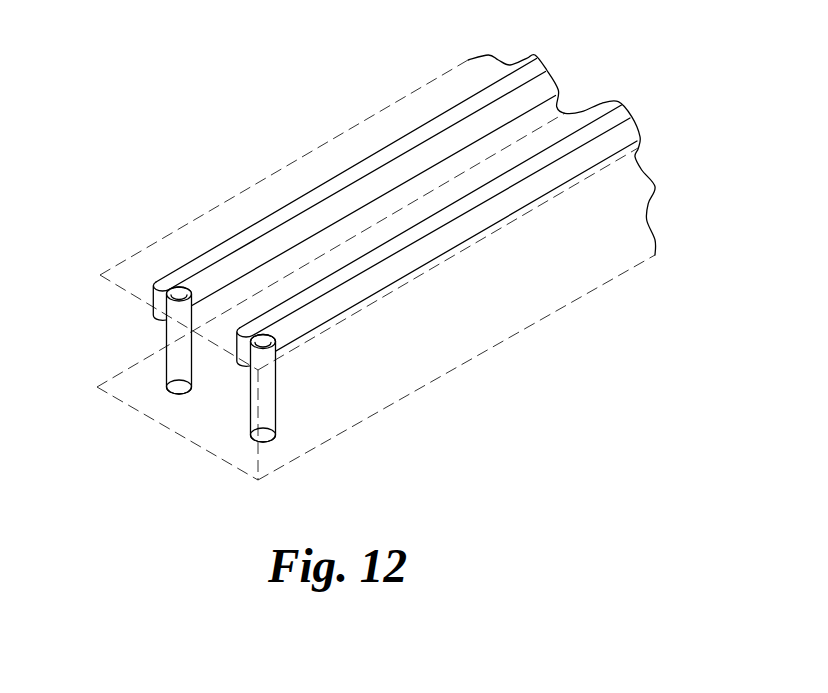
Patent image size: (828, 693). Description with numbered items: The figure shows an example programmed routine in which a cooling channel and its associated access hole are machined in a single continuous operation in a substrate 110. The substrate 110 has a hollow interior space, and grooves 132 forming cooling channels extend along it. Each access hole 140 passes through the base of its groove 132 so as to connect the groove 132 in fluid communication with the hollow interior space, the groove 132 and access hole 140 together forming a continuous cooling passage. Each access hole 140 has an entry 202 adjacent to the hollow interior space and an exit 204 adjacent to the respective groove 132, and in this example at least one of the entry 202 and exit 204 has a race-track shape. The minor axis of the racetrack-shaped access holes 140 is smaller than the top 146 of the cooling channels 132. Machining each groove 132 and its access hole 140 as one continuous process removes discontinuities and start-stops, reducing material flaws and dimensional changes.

The substrate 110 is at (597, 232).
The groove 132 is at (420, 250).
The top of the cooling channel 146 is at (303, 205).
The access hole 140 is at (170, 366).
The entry 202 is at (268, 434).
The exit 204 is at (172, 292).